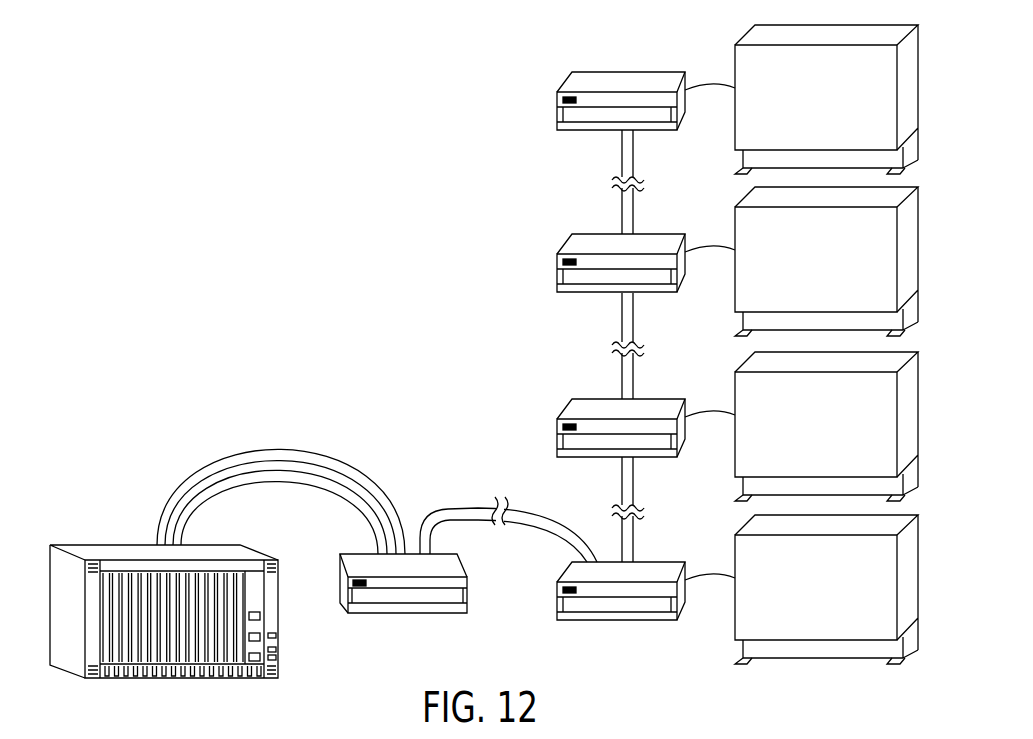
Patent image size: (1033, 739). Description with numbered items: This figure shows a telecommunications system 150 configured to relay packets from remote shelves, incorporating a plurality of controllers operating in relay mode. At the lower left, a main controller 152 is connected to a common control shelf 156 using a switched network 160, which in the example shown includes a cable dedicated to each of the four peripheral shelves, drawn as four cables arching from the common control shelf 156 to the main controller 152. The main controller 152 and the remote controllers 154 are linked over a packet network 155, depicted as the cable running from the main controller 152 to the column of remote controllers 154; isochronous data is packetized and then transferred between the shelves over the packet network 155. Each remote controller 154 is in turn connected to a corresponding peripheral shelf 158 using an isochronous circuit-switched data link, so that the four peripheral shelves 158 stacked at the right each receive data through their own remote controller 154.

The telecommunications system 150 is at (298, 329).
The main controller 152 is at (407, 620).
The remote controller 154 is at (613, 55).
The packet network 155 is at (545, 542).
The common control shelf 156 is at (185, 679).
The peripheral shelf 158 is at (782, 675).
The switched network 160 is at (316, 440).